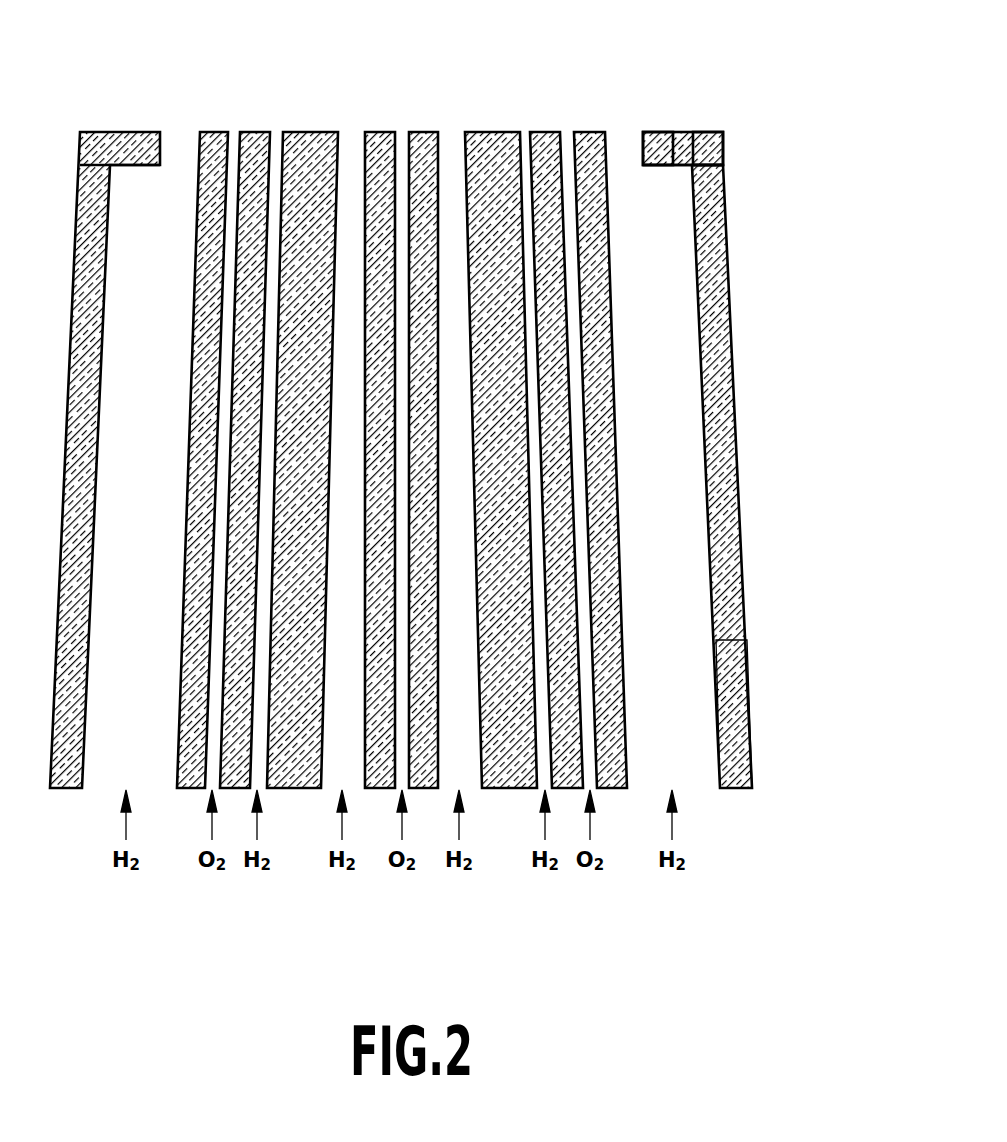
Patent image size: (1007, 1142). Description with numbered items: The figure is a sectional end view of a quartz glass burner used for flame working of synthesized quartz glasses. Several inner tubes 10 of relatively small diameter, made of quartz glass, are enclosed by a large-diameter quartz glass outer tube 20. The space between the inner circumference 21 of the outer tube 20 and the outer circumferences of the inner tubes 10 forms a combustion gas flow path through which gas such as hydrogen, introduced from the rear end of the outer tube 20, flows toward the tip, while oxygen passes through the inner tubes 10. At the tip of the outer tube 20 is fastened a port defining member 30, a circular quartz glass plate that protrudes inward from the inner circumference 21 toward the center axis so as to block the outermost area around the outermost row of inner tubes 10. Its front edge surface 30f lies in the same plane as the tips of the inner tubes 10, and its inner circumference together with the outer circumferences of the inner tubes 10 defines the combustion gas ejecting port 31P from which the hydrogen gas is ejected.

The inner tube 10 is at (241, 96).
The outer tube 20 is at (722, 418).
The inner circumference of the outer tube 21 is at (726, 656).
The port defining member 30 is at (676, 132).
The front edge surface 30f is at (706, 132).
The combustion gas ejecting port 31P is at (643, 150).